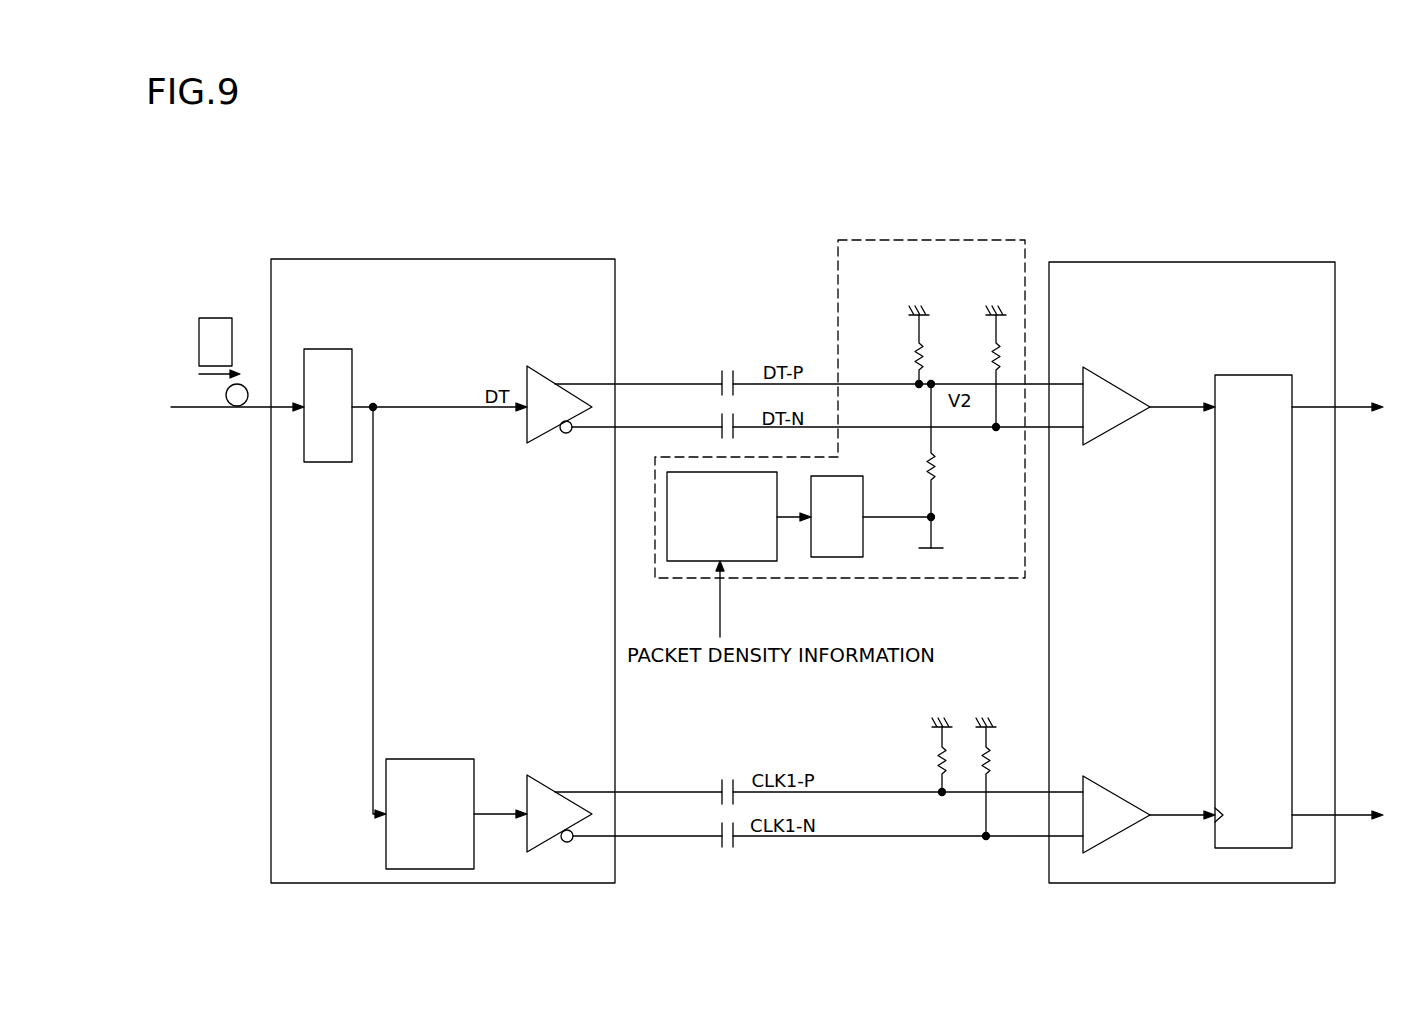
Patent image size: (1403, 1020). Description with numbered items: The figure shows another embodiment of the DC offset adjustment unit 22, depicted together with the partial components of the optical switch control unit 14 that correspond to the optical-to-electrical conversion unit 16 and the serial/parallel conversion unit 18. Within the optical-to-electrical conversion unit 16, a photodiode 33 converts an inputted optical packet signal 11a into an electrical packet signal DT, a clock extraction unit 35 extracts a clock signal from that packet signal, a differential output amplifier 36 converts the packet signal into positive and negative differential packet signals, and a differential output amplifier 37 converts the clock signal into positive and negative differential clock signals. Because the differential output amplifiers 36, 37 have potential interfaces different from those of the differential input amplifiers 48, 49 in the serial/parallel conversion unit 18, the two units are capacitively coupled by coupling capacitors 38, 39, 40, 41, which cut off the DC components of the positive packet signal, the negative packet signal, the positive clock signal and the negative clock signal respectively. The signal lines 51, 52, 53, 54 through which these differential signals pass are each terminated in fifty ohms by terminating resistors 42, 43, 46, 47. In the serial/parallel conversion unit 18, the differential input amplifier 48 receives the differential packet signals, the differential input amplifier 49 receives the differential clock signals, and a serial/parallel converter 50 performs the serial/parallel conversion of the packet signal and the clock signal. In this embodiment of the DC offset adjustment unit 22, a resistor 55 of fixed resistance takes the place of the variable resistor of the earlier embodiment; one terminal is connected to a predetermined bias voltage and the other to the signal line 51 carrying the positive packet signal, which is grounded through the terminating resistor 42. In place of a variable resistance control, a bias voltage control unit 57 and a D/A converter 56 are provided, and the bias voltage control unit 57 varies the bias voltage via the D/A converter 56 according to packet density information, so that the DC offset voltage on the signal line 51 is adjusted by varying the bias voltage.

The optical switch control unit 14 is at (727, 237).
The optical-to-electrical conversion unit 16 is at (453, 259).
The serial/parallel conversion unit 18 is at (1197, 262).
The DC offset adjustment unit 22 is at (947, 240).
The optical packet signal 11a is at (222, 318).
The photodiode 33 is at (338, 349).
The clock extraction unit 35 is at (445, 759).
The differential output amplifier 36 is at (548, 375).
The differential output amplifier 37 is at (545, 783).
The coupling capacitor 38 is at (727, 371).
The coupling capacitor 39 is at (727, 414).
The coupling capacitor 40 is at (727, 780).
The coupling capacitor 41 is at (727, 823).
The terminating resistor 42 is at (915, 346).
The terminating resistor 43 is at (992, 346).
The terminating resistor 46 is at (939, 754).
The terminating resistor 47 is at (988, 754).
The differential input amplifier 48 is at (1110, 383).
The differential input amplifier 49 is at (1110, 791).
The serial/parallel converter 50 is at (1258, 375).
The signal line 51 is at (893, 384).
The signal line 52 is at (903, 427).
The signal line 53 is at (893, 792).
The signal line 54 is at (903, 836).
The resistor 55 is at (943, 485).
The D/A converter 56 is at (863, 480).
The bias voltage control unit 57 is at (747, 561).